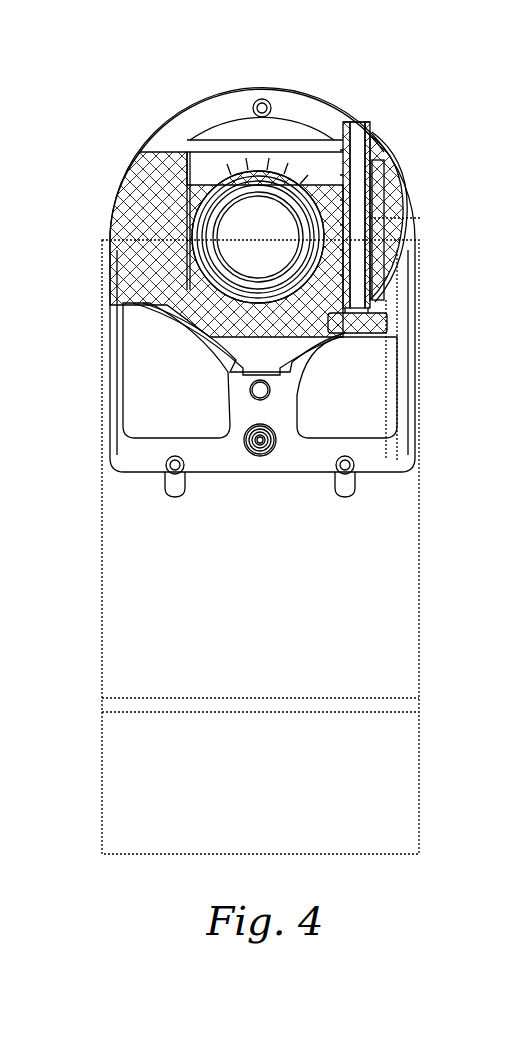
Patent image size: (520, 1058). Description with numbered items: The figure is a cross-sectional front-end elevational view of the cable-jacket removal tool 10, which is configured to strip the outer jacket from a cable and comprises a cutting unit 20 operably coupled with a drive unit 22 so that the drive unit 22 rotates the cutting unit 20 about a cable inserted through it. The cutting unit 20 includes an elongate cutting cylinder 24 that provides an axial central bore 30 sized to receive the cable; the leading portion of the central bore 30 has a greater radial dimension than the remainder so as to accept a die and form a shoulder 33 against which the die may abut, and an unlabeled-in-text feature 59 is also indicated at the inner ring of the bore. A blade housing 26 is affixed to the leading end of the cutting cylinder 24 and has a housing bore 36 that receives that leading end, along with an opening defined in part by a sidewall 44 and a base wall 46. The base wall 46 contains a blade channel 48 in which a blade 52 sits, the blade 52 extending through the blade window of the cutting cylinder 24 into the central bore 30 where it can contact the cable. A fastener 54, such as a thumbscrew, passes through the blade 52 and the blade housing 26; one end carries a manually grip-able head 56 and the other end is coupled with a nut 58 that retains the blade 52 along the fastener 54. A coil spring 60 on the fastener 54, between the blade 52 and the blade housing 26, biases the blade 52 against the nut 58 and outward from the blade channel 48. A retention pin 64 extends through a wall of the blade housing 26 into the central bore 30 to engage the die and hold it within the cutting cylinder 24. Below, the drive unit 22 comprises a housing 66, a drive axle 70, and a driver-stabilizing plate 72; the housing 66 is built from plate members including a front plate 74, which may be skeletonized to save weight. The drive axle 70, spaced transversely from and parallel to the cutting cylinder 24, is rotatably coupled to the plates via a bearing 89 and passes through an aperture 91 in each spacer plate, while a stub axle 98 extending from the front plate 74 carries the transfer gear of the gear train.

The cable-jacket removal tool 10 is at (92, 120).
The cutting unit 20 is at (406, 180).
The drive unit 22 is at (312, 94).
The cutting cylinder 24 is at (192, 237).
The blade housing 26 is at (405, 206).
The central bore 30 is at (226, 258).
The shoulder 33 is at (205, 218).
The housing bore 36 is at (205, 190).
The sidewall 44 is at (196, 160).
The base wall 46 is at (226, 160).
The blade channel 48 is at (386, 236).
The blade 52 is at (318, 152).
The fastener 54 is at (356, 121).
The head 56 is at (387, 322).
The nut 58 is at (374, 137).
The race 59 is at (257, 196).
The coil spring 60 is at (370, 218).
The retention pin 64 is at (240, 367).
The housing 66 is at (254, 484).
The drive axle 70 is at (258, 452).
The driver-stabilizing plate 72 is at (250, 634).
The front plate 74 is at (116, 454).
The bearing 89 is at (272, 452).
The aperture 91 is at (276, 438).
The stub axle 98 is at (272, 390).